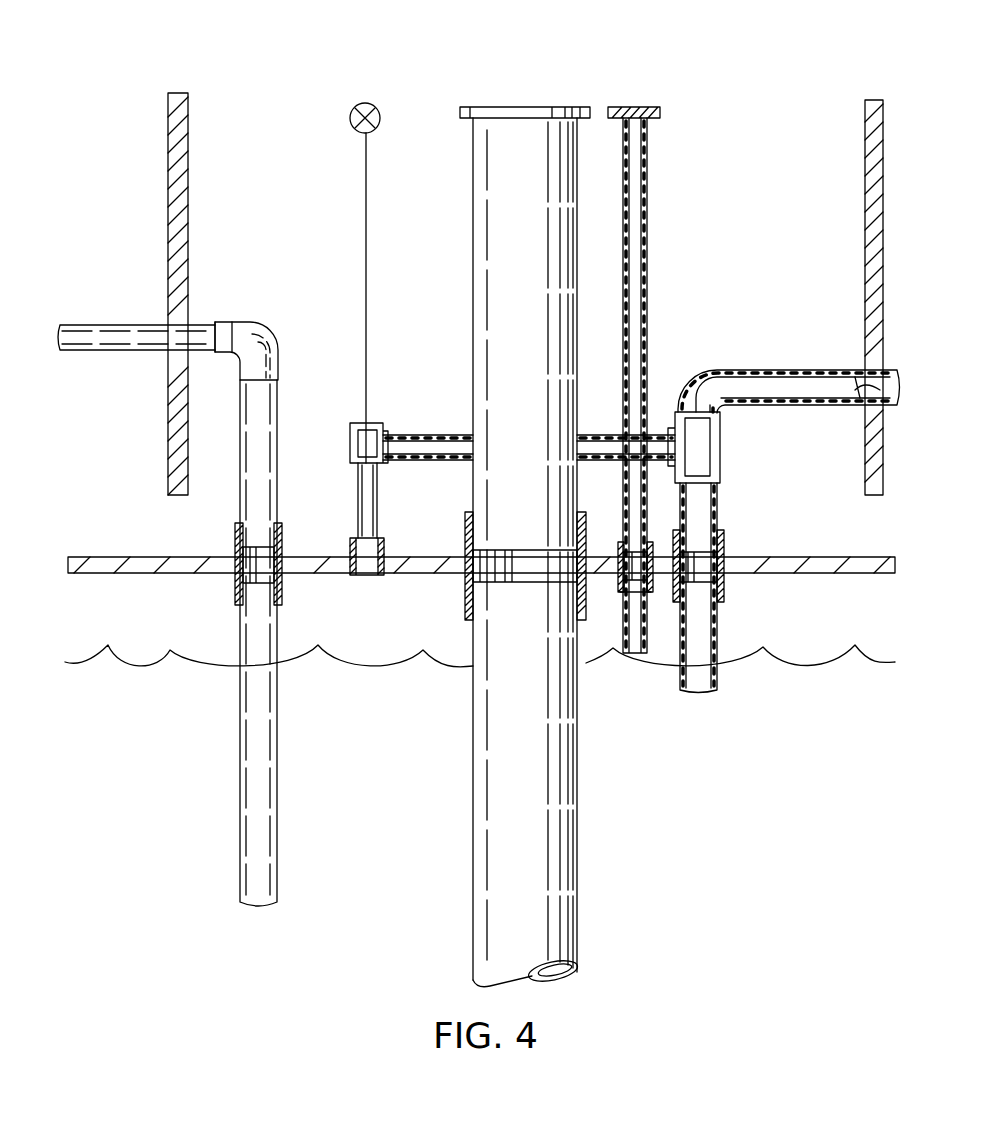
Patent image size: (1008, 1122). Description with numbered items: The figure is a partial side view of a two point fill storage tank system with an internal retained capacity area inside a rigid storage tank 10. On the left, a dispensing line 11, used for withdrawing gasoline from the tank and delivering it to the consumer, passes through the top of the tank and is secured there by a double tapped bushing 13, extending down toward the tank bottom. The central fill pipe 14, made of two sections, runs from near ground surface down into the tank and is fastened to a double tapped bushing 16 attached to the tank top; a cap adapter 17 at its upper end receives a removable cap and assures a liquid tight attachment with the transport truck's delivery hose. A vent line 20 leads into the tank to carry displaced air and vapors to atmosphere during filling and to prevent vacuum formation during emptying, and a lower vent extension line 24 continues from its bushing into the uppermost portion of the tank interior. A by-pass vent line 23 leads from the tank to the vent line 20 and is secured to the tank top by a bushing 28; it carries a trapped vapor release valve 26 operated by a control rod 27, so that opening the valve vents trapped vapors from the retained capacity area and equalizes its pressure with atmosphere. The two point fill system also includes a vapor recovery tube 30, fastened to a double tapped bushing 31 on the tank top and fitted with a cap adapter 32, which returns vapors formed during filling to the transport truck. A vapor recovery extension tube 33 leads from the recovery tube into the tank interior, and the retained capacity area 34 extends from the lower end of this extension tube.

The storage tank 10 is at (110, 557).
The dispensing line 11 is at (278, 432).
The double tapped bushing 13 is at (235, 540).
The fill pipe 14 is at (474, 340).
The double tapped bushing 16 is at (465, 520).
The cap adapter 17 is at (506, 107).
The vent line 20 is at (785, 370).
The by-pass vent line 23 is at (446, 435).
The vent extension line 24 is at (718, 635).
The trapped vapor release valve 26 is at (370, 575).
The control rod 27 is at (366, 178).
The bushing 28 is at (350, 545).
The vapor recovery tube 30 is at (648, 160).
The double tapped bushing 31 is at (620, 545).
The cap adapter 32 is at (632, 107).
The vapor recovery extension tube 33 is at (623, 635).
The retained capacity area 34 is at (380, 655).